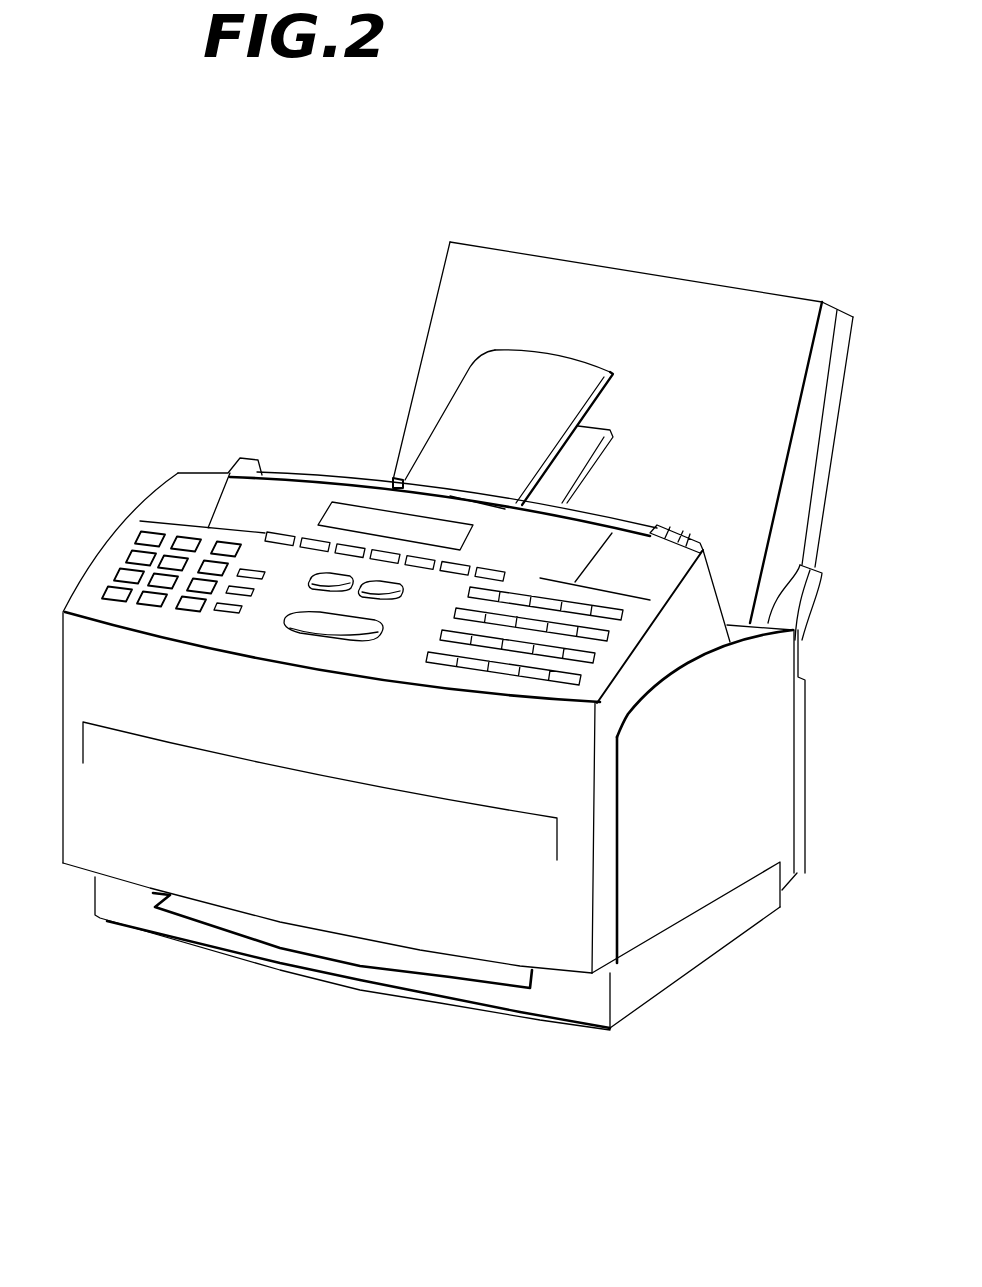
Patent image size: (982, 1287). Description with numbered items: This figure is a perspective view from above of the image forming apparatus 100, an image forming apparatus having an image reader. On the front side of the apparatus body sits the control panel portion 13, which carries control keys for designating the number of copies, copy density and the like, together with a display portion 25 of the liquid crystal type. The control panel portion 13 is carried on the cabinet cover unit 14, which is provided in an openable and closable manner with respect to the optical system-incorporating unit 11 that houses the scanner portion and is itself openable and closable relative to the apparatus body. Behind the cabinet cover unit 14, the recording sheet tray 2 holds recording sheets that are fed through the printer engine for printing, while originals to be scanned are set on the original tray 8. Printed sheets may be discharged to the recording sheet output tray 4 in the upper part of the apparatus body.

The recording sheet tray 2 is at (720, 312).
The recording sheet output tray 4 is at (577, 447).
The original tray 8 is at (535, 377).
The optical system-incorporating unit 11 is at (645, 523).
The control panel portion 13 is at (117, 565).
The cabinet cover unit 14 is at (193, 483).
The display portion 25 is at (362, 518).
The image forming apparatus 100 is at (378, 1003).